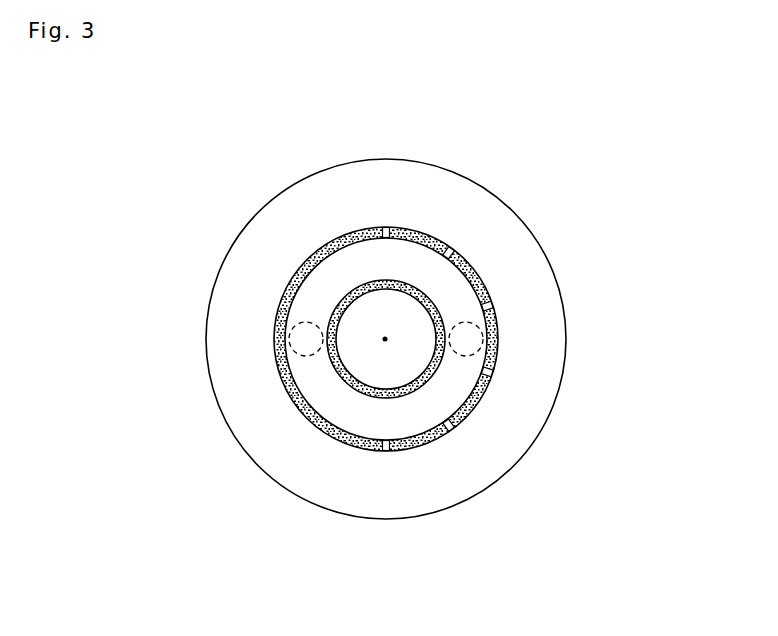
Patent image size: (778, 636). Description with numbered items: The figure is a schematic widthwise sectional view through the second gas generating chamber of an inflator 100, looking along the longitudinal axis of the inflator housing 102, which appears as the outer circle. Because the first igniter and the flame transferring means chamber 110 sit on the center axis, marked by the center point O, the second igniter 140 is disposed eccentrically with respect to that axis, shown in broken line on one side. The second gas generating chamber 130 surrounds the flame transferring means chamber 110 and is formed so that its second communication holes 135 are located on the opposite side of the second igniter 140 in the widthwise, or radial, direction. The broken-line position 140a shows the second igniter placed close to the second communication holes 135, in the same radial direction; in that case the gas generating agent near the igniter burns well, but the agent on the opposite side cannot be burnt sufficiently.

The optical element / lens assembly 100 is at (372, 152).
The inflator housing 102 is at (530, 233).
The flame transferring means chamber 110 is at (413, 410).
The second gas generating chamber 130 is at (294, 264).
The second communication holes 135 is at (388, 230).
The second igniter 140 is at (288, 338).
The second igniter position 140a is at (485, 333).